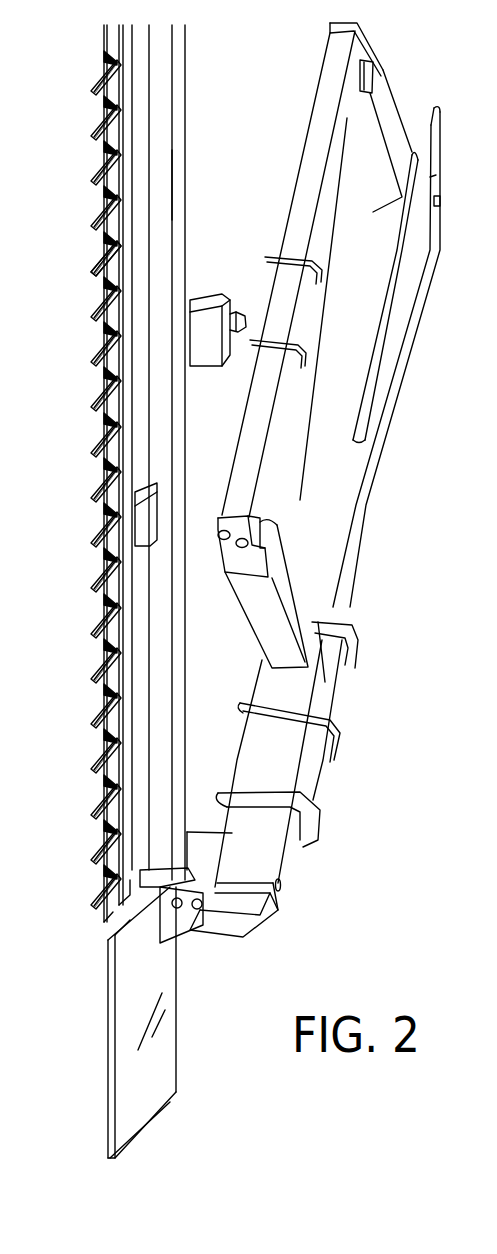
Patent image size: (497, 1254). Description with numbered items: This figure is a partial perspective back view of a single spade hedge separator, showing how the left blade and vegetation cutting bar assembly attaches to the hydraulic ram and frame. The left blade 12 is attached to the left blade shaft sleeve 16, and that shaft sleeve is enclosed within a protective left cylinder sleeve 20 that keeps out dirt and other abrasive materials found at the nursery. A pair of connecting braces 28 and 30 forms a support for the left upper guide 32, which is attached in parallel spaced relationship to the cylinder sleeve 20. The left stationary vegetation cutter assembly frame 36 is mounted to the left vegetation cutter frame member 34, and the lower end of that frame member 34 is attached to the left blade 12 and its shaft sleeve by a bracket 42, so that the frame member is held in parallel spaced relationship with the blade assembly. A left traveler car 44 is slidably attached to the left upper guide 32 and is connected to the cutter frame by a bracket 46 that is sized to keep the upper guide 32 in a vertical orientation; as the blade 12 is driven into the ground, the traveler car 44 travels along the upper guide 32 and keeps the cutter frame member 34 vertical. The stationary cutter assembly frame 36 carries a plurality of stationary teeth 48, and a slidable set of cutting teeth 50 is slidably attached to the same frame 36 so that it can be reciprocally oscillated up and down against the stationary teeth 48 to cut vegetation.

The left blade 12 is at (163, 970).
The left blade shaft sleeve 16 is at (285, 867).
The left cylinder sleeve 20 is at (325, 697).
The connecting brace 28 is at (292, 602).
The connecting brace 30 is at (383, 112).
The left upper guide 32 is at (303, 138).
The left vegetation cutter frame member 34 is at (182, 180).
The left stationary vegetation cutter assembly frame 36 is at (123, 320).
The bracket 42 is at (207, 840).
The left traveler car 44 is at (263, 283).
The bracket 46 is at (213, 340).
The stationary teeth 48 is at (105, 141).
The slidable set of cutting teeth 50 is at (95, 218).